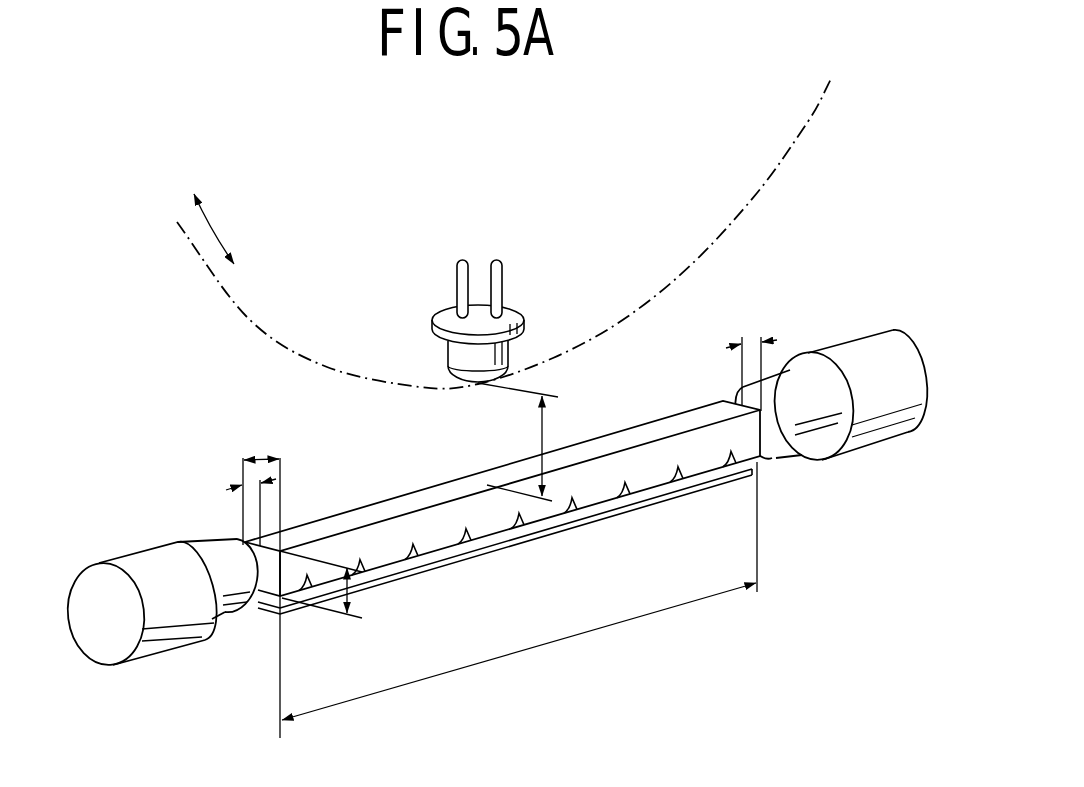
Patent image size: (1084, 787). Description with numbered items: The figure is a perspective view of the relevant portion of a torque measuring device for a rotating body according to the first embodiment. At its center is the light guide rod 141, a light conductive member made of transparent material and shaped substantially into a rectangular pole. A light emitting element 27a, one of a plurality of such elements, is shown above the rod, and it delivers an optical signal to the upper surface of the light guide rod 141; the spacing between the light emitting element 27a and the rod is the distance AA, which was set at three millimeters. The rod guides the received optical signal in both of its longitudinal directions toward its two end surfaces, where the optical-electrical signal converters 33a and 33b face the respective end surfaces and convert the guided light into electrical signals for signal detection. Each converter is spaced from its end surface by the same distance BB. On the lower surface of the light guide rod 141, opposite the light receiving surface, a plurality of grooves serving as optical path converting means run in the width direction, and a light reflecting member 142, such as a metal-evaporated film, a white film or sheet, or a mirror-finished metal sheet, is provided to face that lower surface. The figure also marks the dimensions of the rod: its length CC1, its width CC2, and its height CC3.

The light emitting element 27a is at (448, 353).
The optical-electrical signal converter 33a is at (132, 556).
The optical-electrical signal converter 33b is at (884, 340).
The light guide rod 141 is at (638, 435).
The light reflecting member 142 is at (637, 505).
The distance between light emitting element and light guide rod AA is at (532, 442).
The distance from end surface to optical-electrical signal converter BB is at (242, 478).
The length of light guide rod CC1 is at (519, 591).
The width of light guide rod CC2 is at (260, 460).
The height of light guide rod CC3 is at (352, 604).